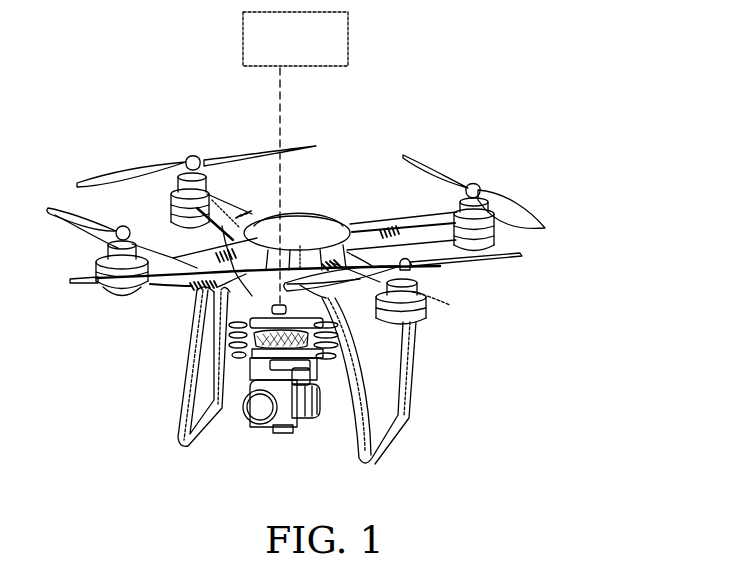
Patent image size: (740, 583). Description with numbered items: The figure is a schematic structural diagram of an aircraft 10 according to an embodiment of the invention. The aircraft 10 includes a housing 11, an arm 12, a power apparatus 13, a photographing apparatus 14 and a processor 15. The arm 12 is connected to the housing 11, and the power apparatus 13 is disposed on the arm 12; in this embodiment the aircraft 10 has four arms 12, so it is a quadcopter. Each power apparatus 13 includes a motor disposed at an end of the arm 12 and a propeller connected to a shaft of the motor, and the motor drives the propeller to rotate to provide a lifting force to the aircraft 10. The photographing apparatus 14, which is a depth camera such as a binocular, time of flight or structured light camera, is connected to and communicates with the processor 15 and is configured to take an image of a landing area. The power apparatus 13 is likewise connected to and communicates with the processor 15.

The aircraft 10 is at (560, 193).
The housing 11 is at (314, 217).
The arm 12 is at (182, 290).
The power apparatus 13 is at (428, 304).
The photographing apparatus 14 is at (288, 435).
The processor 15 is at (243, 38).